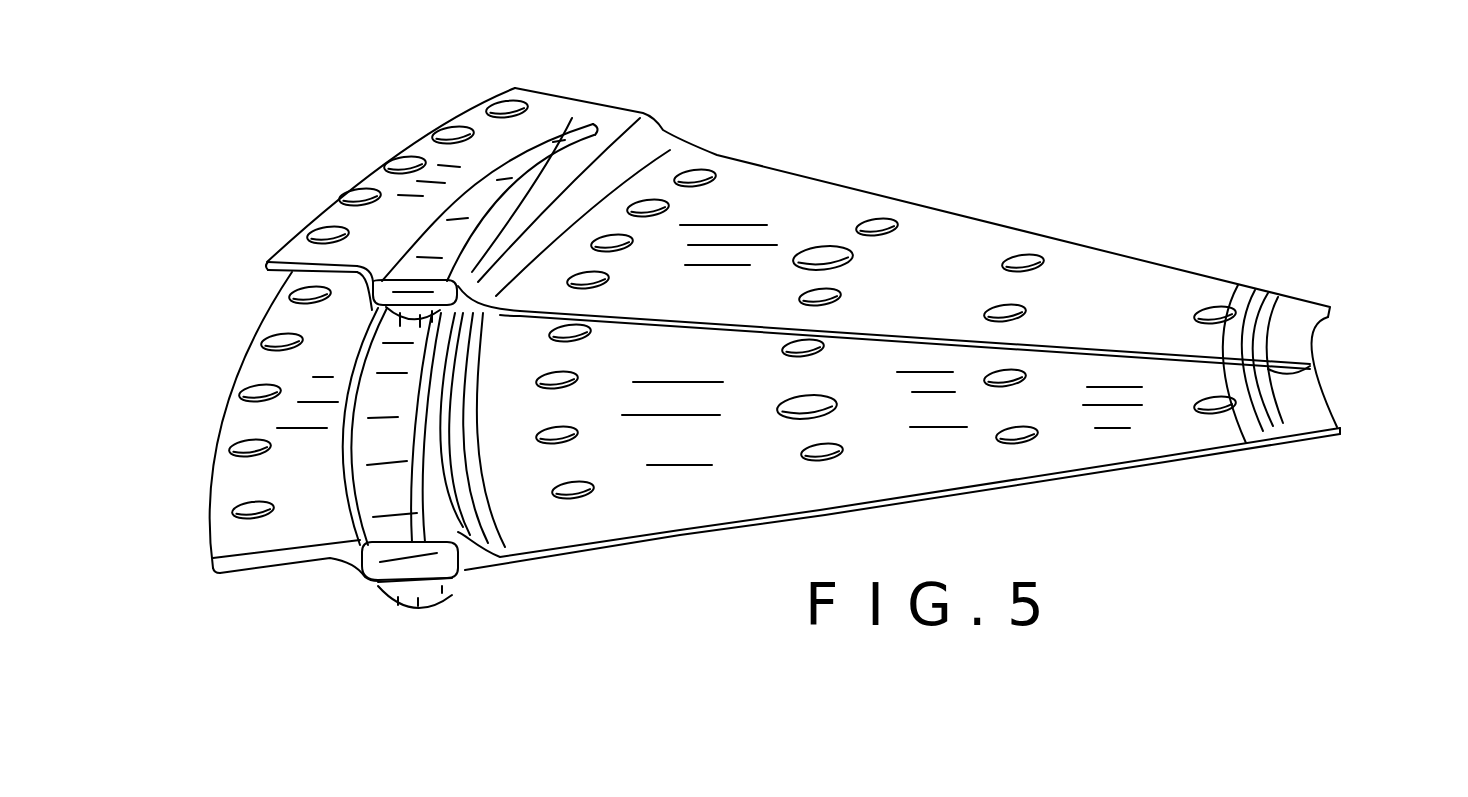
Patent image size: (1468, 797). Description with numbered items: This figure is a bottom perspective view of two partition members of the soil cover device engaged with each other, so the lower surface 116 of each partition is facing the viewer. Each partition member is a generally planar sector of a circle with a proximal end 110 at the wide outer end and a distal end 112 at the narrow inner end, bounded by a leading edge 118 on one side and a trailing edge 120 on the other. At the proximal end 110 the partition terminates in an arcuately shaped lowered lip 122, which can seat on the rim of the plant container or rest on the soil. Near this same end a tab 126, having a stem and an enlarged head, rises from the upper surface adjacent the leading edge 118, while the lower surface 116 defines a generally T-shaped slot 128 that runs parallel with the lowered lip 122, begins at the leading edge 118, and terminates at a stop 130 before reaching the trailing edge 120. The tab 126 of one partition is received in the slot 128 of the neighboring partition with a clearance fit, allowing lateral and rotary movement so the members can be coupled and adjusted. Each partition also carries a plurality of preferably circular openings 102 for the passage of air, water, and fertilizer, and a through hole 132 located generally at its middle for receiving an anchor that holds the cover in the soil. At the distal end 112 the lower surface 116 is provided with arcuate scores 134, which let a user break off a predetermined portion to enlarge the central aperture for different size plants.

The openings 102 is at (1023, 258).
The proximal end 110 is at (495, 140).
The distal end 112 is at (1257, 305).
The lower surface 116 is at (963, 287).
The leading edge 118 is at (1310, 367).
The trailing edge 120 is at (1172, 265).
The lowered lip 122 is at (337, 213).
The tab 126 is at (393, 333).
The slot 128 is at (537, 160).
The stop 130 is at (598, 130).
The through hole 132 is at (818, 242).
The scores 134 is at (1287, 421).